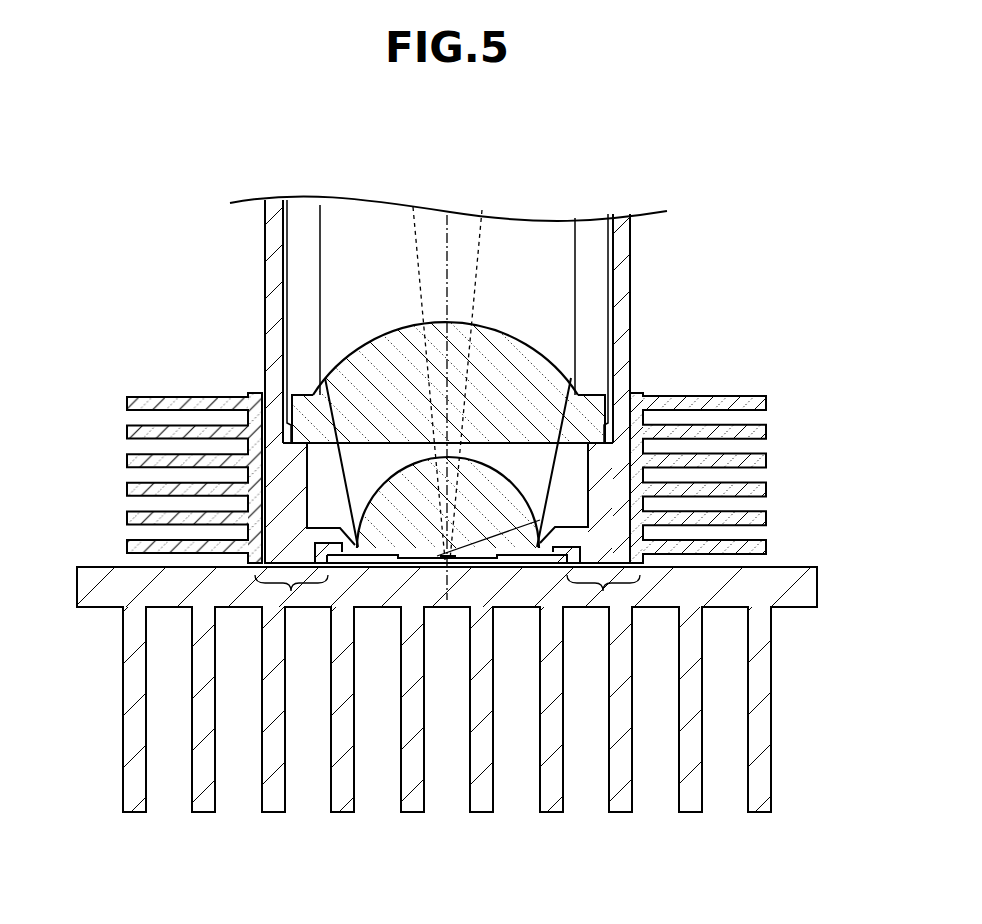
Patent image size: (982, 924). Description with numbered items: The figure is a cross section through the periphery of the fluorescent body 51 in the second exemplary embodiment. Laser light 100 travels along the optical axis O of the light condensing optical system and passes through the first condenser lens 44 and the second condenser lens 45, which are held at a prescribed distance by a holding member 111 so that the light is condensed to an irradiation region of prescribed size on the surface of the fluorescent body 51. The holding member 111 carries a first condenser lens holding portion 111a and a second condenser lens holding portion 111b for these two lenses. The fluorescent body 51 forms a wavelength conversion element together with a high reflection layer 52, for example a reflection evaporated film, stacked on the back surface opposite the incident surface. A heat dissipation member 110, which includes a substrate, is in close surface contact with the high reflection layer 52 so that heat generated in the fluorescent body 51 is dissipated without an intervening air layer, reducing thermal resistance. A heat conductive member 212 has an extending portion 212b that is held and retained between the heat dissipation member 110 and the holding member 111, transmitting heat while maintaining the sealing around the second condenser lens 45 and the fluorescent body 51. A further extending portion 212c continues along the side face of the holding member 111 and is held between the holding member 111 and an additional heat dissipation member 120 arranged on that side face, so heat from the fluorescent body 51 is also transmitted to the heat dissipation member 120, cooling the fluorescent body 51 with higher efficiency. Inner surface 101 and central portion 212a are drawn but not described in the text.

The laser light 100 is at (413, 247).
The holding member 111 is at (630, 263).
The inner surface of housing 101 is at (575, 320).
The first condenser lens holding portion 111a is at (607, 433).
The second condenser lens holding portion 111b is at (560, 538).
The first condenser lens 44 is at (378, 336).
The second condenser lens 45 is at (392, 480).
The fluorescent body 51 is at (437, 556).
The high reflection layer 52 is at (455, 572).
The heat conductive member 212 is at (520, 572).
The substrate central portion 212a is at (407, 572).
The extending portion 212b is at (291, 595).
The extending portion 212c is at (262, 393).
The heat dissipation member 120 is at (127, 458).
The heat dissipation member 110 is at (203, 812).
The optical axis O is at (447, 256).